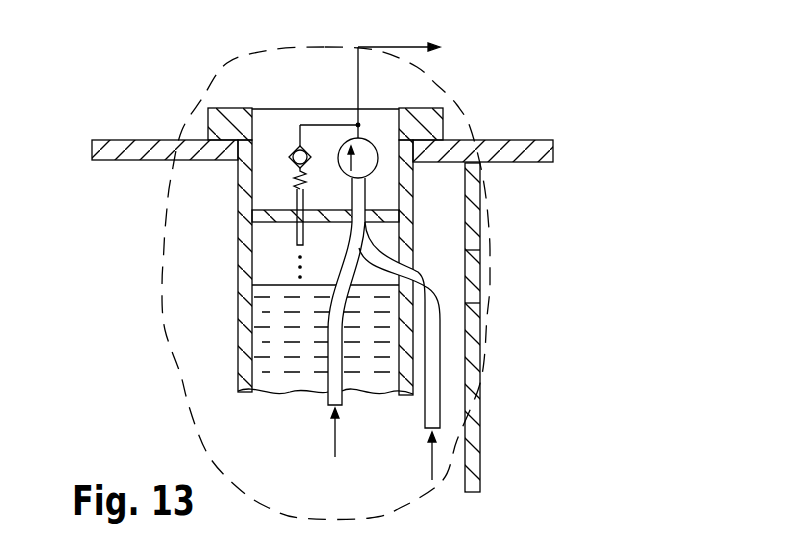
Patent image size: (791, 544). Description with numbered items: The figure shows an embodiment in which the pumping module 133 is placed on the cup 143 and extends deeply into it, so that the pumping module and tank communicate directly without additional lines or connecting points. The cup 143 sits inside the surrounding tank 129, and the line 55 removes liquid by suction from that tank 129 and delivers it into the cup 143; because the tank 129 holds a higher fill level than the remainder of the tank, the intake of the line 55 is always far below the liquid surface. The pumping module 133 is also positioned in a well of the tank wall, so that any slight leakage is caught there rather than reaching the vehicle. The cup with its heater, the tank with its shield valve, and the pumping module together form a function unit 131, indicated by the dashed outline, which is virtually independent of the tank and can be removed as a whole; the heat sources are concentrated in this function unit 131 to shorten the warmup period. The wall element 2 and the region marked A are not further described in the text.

The wall plate 2 is at (553, 152).
The line 55 is at (437, 360).
The tank 129 is at (480, 450).
The function unit 131 is at (183, 388).
The pumping module 133 is at (398, 111).
The cup 143 is at (240, 322).
The liquid A is at (330, 368).